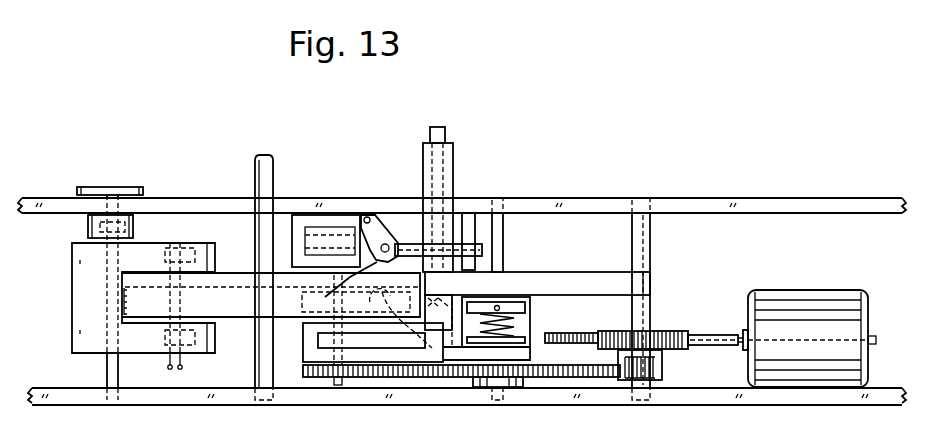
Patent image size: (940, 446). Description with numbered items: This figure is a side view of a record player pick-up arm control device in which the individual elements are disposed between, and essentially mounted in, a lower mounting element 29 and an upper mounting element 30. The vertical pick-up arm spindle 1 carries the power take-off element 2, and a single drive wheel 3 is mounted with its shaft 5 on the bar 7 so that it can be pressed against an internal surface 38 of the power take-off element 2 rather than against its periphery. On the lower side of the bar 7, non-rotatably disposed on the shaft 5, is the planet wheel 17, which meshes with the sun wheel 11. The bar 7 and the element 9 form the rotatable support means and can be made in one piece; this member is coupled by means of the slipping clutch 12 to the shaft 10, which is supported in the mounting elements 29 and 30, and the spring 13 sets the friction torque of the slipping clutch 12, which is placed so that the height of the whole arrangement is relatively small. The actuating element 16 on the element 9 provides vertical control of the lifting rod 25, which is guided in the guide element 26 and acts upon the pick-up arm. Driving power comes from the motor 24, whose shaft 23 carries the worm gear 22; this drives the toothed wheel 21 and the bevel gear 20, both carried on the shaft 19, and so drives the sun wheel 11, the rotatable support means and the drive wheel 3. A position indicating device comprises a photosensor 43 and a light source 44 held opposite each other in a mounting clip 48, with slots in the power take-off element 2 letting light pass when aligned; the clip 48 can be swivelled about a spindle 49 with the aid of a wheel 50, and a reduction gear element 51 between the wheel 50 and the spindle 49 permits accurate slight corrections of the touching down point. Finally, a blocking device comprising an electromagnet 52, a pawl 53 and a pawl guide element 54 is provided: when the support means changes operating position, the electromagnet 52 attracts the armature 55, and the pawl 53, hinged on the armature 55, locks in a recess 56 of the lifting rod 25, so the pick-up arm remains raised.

The pick-up arm spindle 1 is at (270, 178).
The power take-off element 2 is at (229, 275).
The drive wheel 3 is at (386, 299).
The shaft 5 is at (340, 378).
The bar 7 is at (312, 350).
The element 9 is at (575, 285).
The shaft 10 is at (502, 250).
The sun wheel 11 is at (560, 378).
The slipping clutch 12 is at (535, 300).
The spring 13 is at (516, 330).
The actuating element 16 is at (439, 320).
The planet wheel 17 is at (312, 378).
The shaft 19 is at (650, 250).
The bevel gear 20 is at (662, 368).
The toothed wheel 21 is at (583, 338).
The worm gear 22 is at (662, 332).
The shaft 23 is at (736, 336).
The motor 24 is at (870, 321).
The lifting rod 25 is at (440, 137).
The guide element 26 is at (452, 172).
The mounting element 29 is at (680, 405).
The mounting element 30 is at (692, 200).
The internal surface 38 is at (410, 326).
The photosensor 43 is at (160, 362).
The light source 44 is at (180, 252).
The mounting clip 48 is at (73, 298).
The spindle 49 is at (108, 372).
The wheel 50 is at (130, 187).
The reduction gear element 51 is at (86, 226).
The electromagnet 52 is at (328, 230).
The pawl 53 is at (388, 240).
The pawl guide element 54 is at (470, 218).
The armature 55 is at (355, 301).
The recess 56 is at (423, 250).